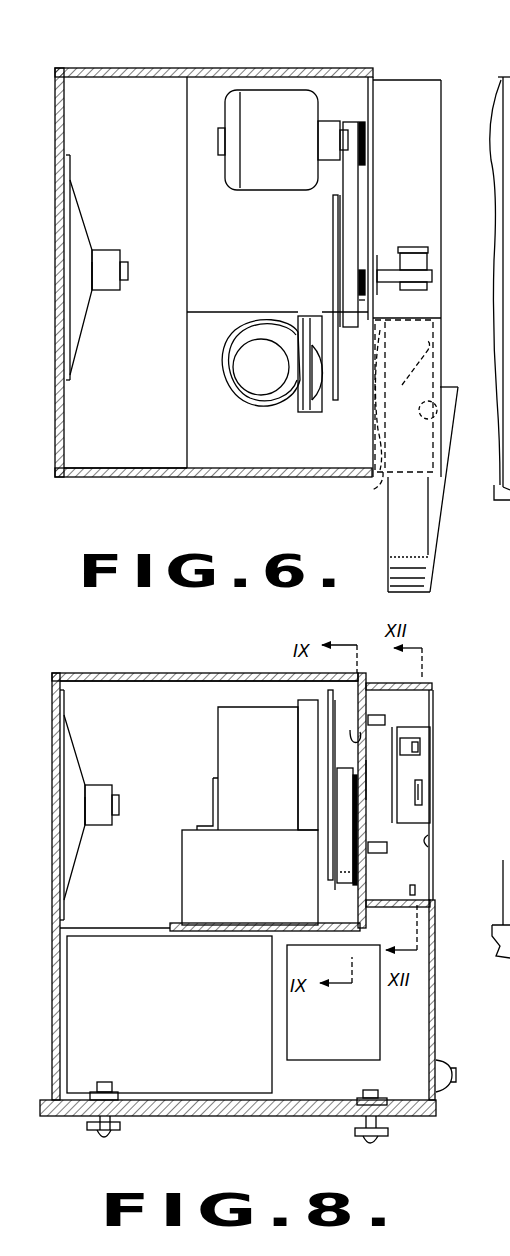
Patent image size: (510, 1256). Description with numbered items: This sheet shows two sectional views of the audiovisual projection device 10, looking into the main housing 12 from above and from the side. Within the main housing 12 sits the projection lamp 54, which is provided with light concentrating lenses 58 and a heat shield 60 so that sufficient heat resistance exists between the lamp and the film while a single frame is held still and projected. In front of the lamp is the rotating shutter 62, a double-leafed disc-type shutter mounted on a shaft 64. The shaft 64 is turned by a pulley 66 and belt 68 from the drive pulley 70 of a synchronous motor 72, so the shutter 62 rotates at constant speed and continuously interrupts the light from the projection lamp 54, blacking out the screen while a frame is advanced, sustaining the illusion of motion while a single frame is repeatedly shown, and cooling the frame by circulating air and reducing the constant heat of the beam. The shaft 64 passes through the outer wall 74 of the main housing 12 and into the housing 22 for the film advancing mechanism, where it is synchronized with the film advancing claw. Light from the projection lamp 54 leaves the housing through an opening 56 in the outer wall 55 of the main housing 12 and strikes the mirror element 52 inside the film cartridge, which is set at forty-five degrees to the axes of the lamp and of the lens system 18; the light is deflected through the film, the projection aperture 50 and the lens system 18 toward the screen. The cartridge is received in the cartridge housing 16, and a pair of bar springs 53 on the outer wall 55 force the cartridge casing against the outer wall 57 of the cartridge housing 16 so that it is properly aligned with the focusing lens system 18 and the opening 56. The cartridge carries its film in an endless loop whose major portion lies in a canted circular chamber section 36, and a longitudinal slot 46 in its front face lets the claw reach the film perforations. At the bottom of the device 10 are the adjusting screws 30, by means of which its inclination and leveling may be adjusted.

In FIG. 6, the audiovisual projection device 10 is at (122, 66).
In FIG. 8, the audiovisual projection device 10 is at (62, 671).
In FIG. 6, the main housing 12 is at (121, 478).
In FIG. 8, the main housing 12 is at (171, 673).
In FIG. 6, the cartridge housing 16 is at (437, 380).
In FIG. 8, the cartridge housing 16 is at (433, 690).
In FIG. 6, the lens system 18 is at (428, 242).
In FIG. 6, the housing for the film advancing mechanism 22 is at (442, 98).
In FIG. 8, the adjusting screws 30 is at (97, 1130).
In FIG. 6, the circular chamber section 36 is at (443, 480).
In FIG. 8, the longitudinal slot 46 is at (423, 790).
In FIG. 8, the projection aperture 50 is at (416, 745).
In FIG. 6, the mirror element 52 is at (436, 345).
In FIG. 6, the bar springs 53 is at (370, 493).
In FIG. 8, the bar springs 53 is at (387, 720).
In FIG. 6, the projection lamp 54 is at (250, 385).
In FIG. 6, the outer wall of the housing 55 is at (377, 428).
In FIG. 8, the outer wall of the housing 55 is at (368, 780).
In FIG. 8, the opening 56 is at (348, 725).
In FIG. 6, the outer wall of the cartridge housing 57 is at (437, 410).
In FIG. 8, the outer wall of the cartridge housing 57 is at (432, 841).
In FIG. 6, the light concentrating lenses 58 is at (303, 318).
In FIG. 6, the heat shield 60 is at (316, 320).
In FIG. 6, the rotating shutter 62 is at (338, 342).
In FIG. 8, the rotating shutter 62 is at (330, 708).
In FIG. 6, the shaft 64 is at (360, 307).
In FIG. 6, the pulley 66 is at (345, 272).
In FIG. 8, the pulley 66 is at (336, 772).
In FIG. 6, the belt 68 is at (350, 207).
In FIG. 8, the belt 68 is at (340, 815).
In FIG. 6, the drive pulley 70 is at (363, 140).
In FIG. 8, the drive pulley 70 is at (340, 884).
In FIG. 6, the synchronous motor 72 is at (282, 153).
In FIG. 6, the outer wall of the housing 74 is at (374, 166).